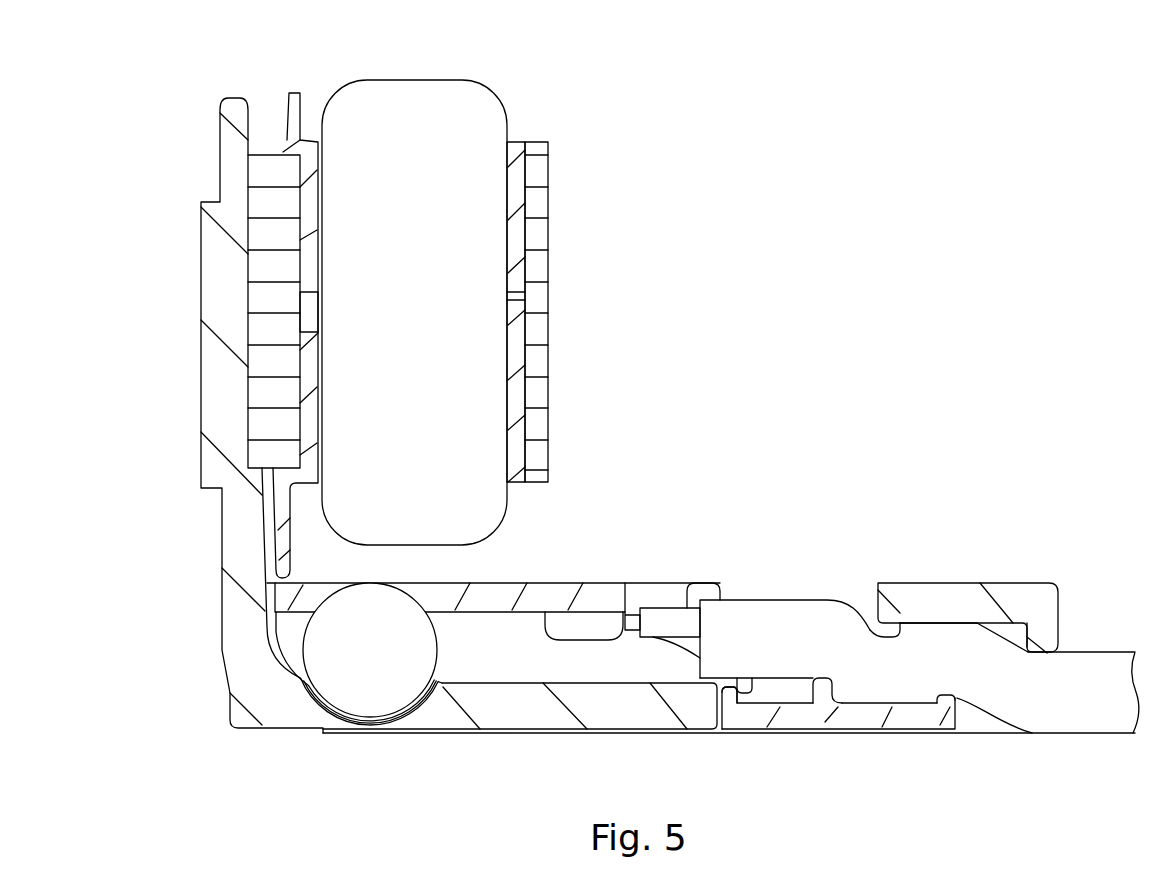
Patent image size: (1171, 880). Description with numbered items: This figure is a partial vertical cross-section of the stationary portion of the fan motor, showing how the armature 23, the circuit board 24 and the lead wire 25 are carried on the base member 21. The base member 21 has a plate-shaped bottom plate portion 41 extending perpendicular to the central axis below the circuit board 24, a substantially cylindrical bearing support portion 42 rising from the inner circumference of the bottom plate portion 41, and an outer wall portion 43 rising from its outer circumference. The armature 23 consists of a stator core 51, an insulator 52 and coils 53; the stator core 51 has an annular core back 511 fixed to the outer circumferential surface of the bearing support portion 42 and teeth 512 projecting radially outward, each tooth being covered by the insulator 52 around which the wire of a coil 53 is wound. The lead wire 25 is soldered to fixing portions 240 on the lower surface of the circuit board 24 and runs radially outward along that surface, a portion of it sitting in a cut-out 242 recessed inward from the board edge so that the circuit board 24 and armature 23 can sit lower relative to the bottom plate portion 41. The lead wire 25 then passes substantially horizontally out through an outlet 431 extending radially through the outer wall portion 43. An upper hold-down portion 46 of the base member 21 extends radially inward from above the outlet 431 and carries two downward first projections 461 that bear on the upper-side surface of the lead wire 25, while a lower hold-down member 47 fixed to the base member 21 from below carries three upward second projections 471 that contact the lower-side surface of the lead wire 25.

The base member 21 is at (372, 735).
The armature 23 is at (453, 71).
The circuit board 24 is at (550, 597).
The fixing portions 240 is at (587, 625).
The cut-out 242 is at (650, 601).
The lead wire 25 is at (787, 640).
The bottom plate portion 41 is at (515, 710).
The bearing support portion 42 is at (228, 290).
The outer wall portion 43 is at (1058, 627).
The outlet 431 is at (1045, 700).
The upper hold-down portion 46 is at (968, 605).
The first projections 461 is at (888, 630).
The lower hold-down member 47 is at (903, 715).
The second projections 471 is at (725, 690).
The stator core 51 is at (563, 213).
The core back 511 is at (274, 237).
The teeth 512 is at (540, 298).
The insulator 52 is at (515, 178).
The coils 53 is at (410, 125).